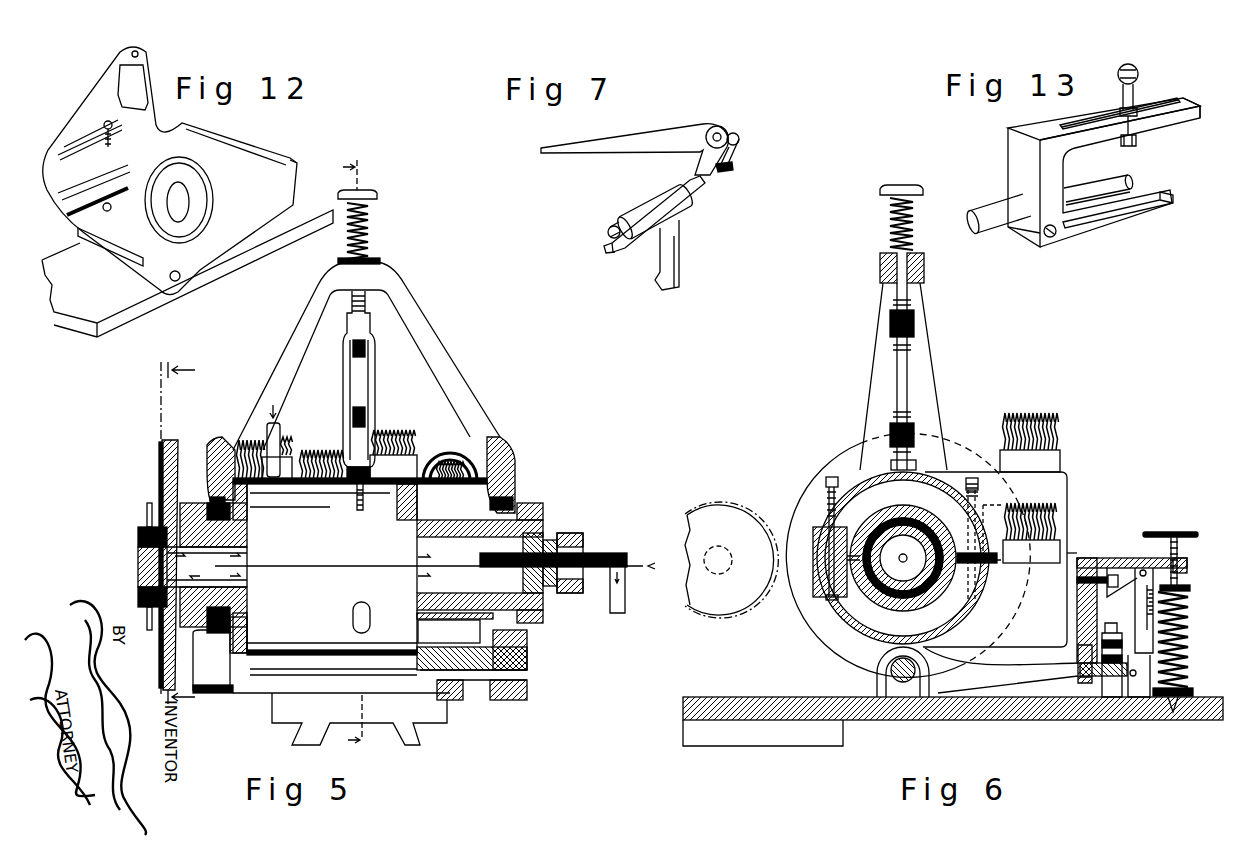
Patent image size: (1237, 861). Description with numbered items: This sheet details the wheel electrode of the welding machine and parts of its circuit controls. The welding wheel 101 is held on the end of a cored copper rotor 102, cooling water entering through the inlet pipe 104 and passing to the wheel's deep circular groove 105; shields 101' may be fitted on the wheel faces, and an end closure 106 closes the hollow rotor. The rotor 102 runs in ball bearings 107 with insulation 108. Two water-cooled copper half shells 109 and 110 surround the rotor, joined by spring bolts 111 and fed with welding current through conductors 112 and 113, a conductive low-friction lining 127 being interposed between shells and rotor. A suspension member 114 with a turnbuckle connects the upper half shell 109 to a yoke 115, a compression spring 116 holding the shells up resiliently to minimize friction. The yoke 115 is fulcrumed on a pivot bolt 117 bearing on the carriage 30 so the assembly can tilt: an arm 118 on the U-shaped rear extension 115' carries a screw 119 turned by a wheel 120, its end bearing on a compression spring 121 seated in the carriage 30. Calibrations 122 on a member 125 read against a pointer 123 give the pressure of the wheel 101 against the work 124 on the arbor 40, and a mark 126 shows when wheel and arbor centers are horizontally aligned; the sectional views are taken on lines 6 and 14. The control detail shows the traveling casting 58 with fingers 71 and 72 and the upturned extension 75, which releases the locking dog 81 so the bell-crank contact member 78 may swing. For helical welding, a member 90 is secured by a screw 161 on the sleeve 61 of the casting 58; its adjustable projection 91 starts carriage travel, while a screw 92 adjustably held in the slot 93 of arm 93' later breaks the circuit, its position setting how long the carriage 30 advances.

In FIG. 5, the section line 6- 6 is at (359, 455).
In FIG. 5, the section line 14- 14 is at (167, 534).
In FIG. 12, the carriage 30 is at (278, 243).
In FIG. 6, the carriage 30 is at (1020, 720).
In FIG. 6, the arbor 40 is at (740, 600).
In FIG. 7, the casting 58 is at (681, 248).
In FIG. 13, the sleeve 61 is at (1113, 178).
In FIG. 7, the finger 71 is at (610, 231).
In FIG. 7, the finger 72 is at (704, 186).
In FIG. 7, the extension 75 is at (735, 169).
In FIG. 7, the contact member 78 is at (650, 132).
In FIG. 7, the locking dog 81 is at (739, 131).
In FIG. 13, the member 90 is at (1062, 188).
In FIG. 13, the projection 91 is at (1175, 199).
In FIG. 13, the screw 92 is at (1138, 73).
In FIG. 13, the slot 93 is at (1132, 96).
In FIG. 13, the arm 93' is at (1187, 122).
In FIG. 5, the welding wheel 101 is at (153, 565).
In FIG. 6, the welding wheel 101 is at (906, 557).
In FIG. 5, the shields 101' is at (141, 565).
In FIG. 5, the copper rotor 102 is at (138, 557).
In FIG. 6, the copper rotor 102 is at (917, 592).
In FIG. 5, the inlet pipe 104 is at (480, 572).
In FIG. 6, the inlet pipe 104 is at (903, 562).
In FIG. 5, the circular groove 105 is at (508, 568).
In FIG. 5, the end closure 106 is at (550, 600).
In FIG. 12, the ball bearings 107 is at (213, 203).
In FIG. 5, the ball bearings 107 is at (205, 472).
In FIG. 5, the insulation 108 is at (510, 443).
In FIG. 12, the upper half shell 109 is at (127, 167).
In FIG. 5, the upper half shell 109 is at (253, 503).
In FIG. 6, the upper half shell 109 is at (927, 495).
In FIG. 12, the lower half shell 110 is at (113, 212).
In FIG. 5, the lower half shell 110 is at (290, 600).
In FIG. 6, the lower half shell 110 is at (848, 630).
In FIG. 12, the spring bolts 111 is at (103, 133).
In FIG. 5, the spring bolts 111 is at (353, 497).
In FIG. 6, the spring bolts 111 is at (828, 480).
In FIG. 5, the conductor 112 is at (283, 437).
In FIG. 6, the conductor 112 is at (1035, 412).
In FIG. 5, the conductor 113 is at (313, 450).
In FIG. 6, the conductor 113 is at (1043, 505).
In FIG. 5, the suspension member 114 is at (376, 383).
In FIG. 6, the suspension member 114 is at (897, 373).
In FIG. 12, the yoke 115 is at (247, 142).
In FIG. 5, the yoke 115 is at (366, 354).
In FIG. 6, the yoke 115 is at (922, 361).
In FIG. 6, the U-shaped rear extension 115' is at (1089, 537).
In FIG. 13, the compression spring 116 is at (930, 226).
In FIG. 5, the compression spring 116 is at (370, 236).
In FIG. 6, the compression spring 116 is at (915, 225).
In FIG. 5, the pivot bolt 117 is at (463, 700).
In FIG. 6, the pivot bolt 117 is at (880, 680).
In FIG. 6, the arm 118 is at (1100, 560).
In FIG. 6, the screw 119 is at (1180, 545).
In FIG. 6, the wheel 120 is at (1178, 531).
In FIG. 6, the compression spring 121 is at (1187, 620).
In FIG. 6, the calibrations 122 is at (1153, 585).
In FIG. 6, the pointer 123 is at (1180, 588).
In FIG. 6, the work 124 is at (738, 505).
In FIG. 6, the member 125 is at (1150, 633).
In FIG. 6, the mark 126 is at (1133, 718).
In FIG. 6, the lining 127 is at (943, 480).
In FIG. 13, the screw 161 is at (1050, 238).